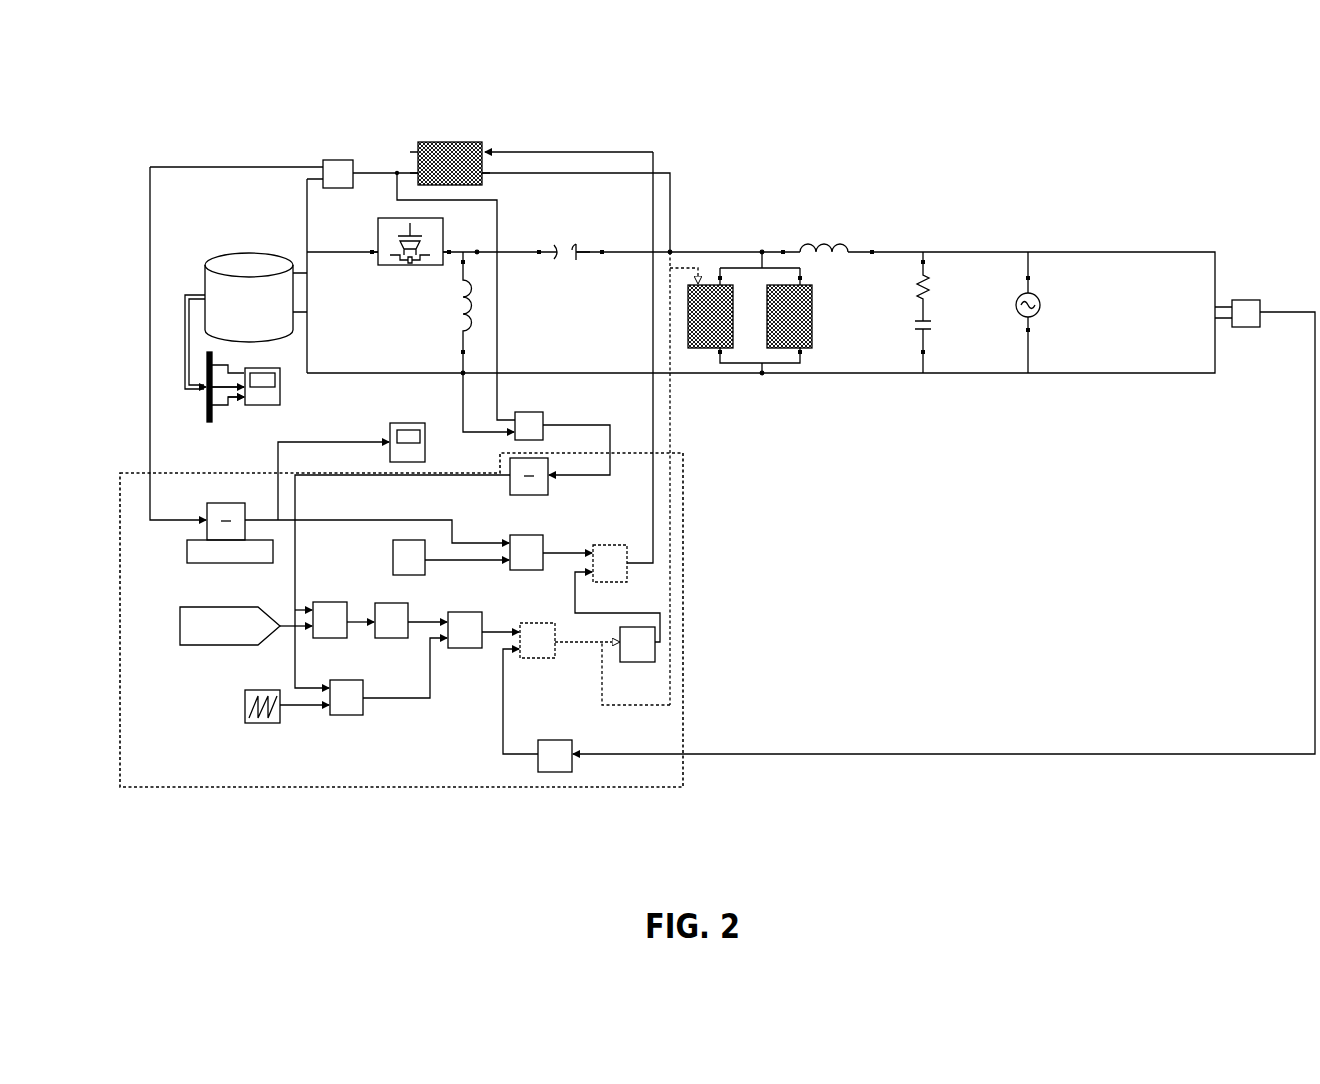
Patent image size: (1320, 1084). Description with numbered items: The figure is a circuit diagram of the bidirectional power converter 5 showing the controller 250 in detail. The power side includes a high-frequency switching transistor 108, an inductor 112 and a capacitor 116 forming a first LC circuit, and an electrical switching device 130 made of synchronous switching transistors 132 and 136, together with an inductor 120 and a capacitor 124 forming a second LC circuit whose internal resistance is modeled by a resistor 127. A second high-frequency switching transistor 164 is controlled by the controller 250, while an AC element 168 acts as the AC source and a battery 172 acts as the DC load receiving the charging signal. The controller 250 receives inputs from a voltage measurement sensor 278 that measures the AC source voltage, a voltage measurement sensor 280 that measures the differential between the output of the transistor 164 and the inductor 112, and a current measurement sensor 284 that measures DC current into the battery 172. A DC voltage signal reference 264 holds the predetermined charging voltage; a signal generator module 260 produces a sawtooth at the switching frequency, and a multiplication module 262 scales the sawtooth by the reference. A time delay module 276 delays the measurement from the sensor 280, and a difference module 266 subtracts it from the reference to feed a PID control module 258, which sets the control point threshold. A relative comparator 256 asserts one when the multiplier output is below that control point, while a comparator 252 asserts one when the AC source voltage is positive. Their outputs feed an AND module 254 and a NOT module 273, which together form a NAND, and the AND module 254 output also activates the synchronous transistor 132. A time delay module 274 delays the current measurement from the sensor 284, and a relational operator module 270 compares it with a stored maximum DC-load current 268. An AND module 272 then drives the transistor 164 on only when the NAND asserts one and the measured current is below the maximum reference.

The bidirectional power converter 5 is at (124, 111).
The high-frequency switching transistor 108 is at (392, 218).
The inductor 112 is at (456, 320).
The capacitor 116 is at (578, 250).
The inductor 120 is at (850, 245).
The capacitor 124 is at (920, 333).
The resistor 127 is at (926, 292).
The electrical switching device 130 is at (785, 313).
The synchronous switching transistor 132 is at (726, 348).
The synchronous switching transistor 136 is at (812, 305).
The second high-frequency switching transistor 164 is at (455, 141).
The AC element 168 is at (1036, 318).
The battery 172 is at (222, 262).
The controller 250 is at (305, 788).
The comparator 252 is at (572, 768).
The AND module 254 is at (528, 623).
The relative comparator 256 is at (482, 612).
The PID control module 258 is at (410, 611).
The signal generator module 260 is at (260, 690).
The multiplication module 262 is at (342, 681).
The DC voltage signal reference 264 is at (218, 608).
The difference module 266 is at (315, 602).
The maximum DC-load current 268 is at (393, 545).
The relational operator module 270 is at (512, 536).
The AND module 272 is at (593, 548).
The NOT module 273 is at (620, 640).
The time delay module 274 is at (210, 503).
The time delay module 276 is at (548, 491).
The voltage measurement sensor 278 is at (1242, 298).
The voltage measurement sensor 280 is at (530, 413).
The current measurement sensor 284 is at (320, 177).